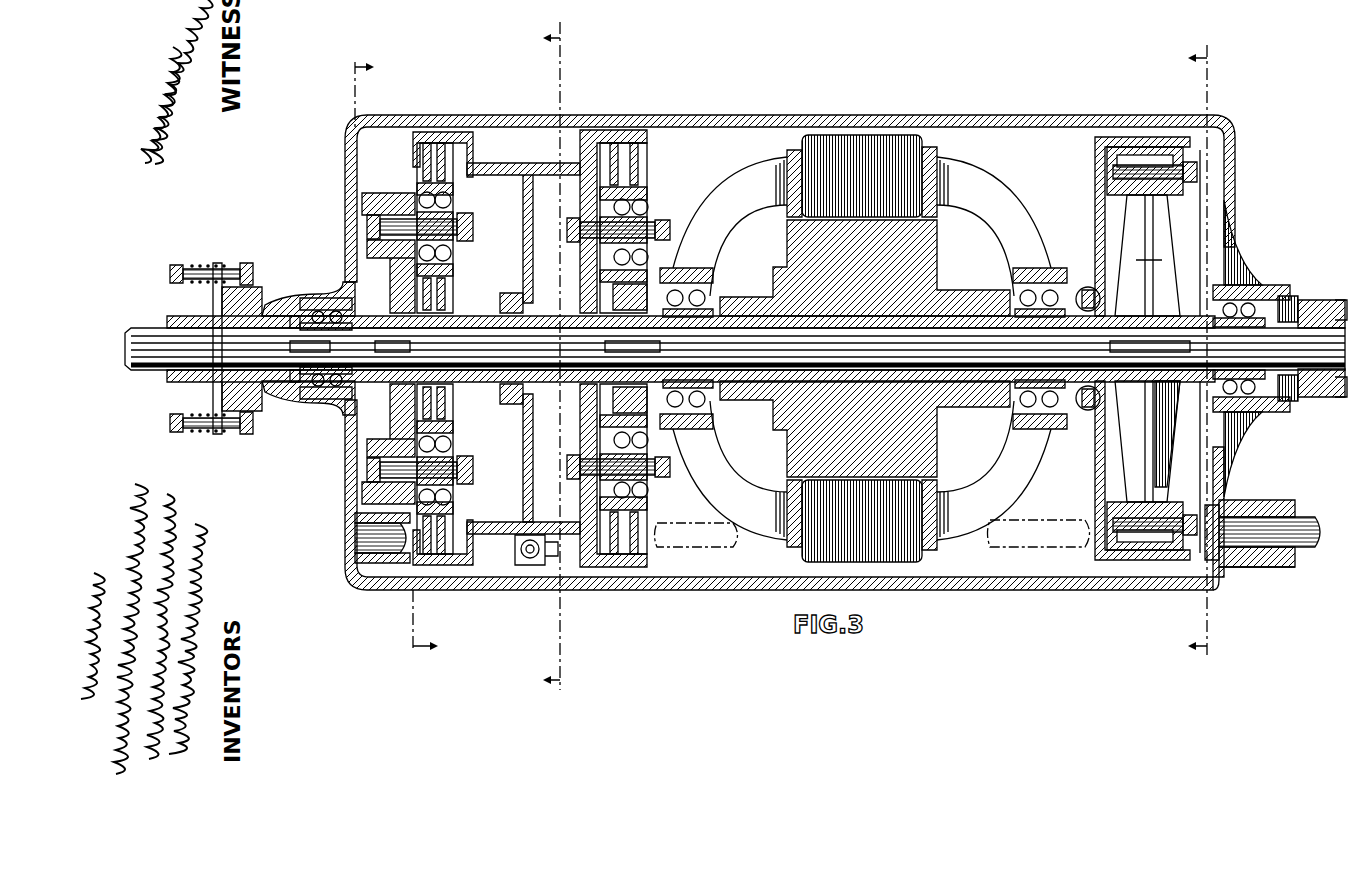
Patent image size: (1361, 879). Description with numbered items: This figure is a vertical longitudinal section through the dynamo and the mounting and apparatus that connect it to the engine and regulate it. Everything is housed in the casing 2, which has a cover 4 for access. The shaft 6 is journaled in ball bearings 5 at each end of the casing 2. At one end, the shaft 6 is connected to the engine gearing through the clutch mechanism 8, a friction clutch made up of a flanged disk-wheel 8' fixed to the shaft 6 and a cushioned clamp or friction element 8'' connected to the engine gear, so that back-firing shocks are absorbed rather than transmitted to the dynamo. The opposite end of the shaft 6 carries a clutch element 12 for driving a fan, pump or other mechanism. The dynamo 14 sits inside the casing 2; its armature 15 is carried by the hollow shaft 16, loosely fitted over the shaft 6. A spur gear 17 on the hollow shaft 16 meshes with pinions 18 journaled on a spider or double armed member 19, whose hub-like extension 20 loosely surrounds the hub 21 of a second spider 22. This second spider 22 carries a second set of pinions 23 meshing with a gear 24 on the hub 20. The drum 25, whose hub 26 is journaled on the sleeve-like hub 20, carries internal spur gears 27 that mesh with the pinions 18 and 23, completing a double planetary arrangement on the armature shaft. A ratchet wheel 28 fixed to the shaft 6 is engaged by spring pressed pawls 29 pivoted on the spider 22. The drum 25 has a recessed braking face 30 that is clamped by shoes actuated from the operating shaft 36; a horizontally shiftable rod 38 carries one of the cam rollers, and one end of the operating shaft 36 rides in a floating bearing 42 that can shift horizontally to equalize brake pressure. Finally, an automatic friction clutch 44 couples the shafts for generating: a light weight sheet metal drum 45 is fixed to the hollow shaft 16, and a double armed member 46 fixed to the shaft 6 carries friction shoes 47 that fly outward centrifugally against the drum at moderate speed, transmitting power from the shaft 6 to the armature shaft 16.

The casing 2 is at (983, 591).
The cover 4 is at (862, 130).
The ball bearings 5 is at (307, 425).
The shaft 6 is at (160, 375).
The clutch mechanism 8 is at (221, 348).
The flanged or disk-wheel 8' is at (197, 444).
The cushioned clamp or friction element 8'' is at (200, 257).
The clutch element 12 is at (1316, 307).
The dynamo 14 is at (990, 190).
The armature 15 is at (800, 257).
The hollow shaft 16 is at (753, 405).
The spur gear 17 is at (607, 300).
The pinions 18 is at (648, 160).
The spider or double armed member 19 is at (612, 292).
The hub-like extension 20 is at (512, 292).
The hub 21 is at (522, 400).
The second spider or double armed member 22 is at (375, 258).
The pinions or second set of spur gears 23 is at (418, 162).
The gear 24 is at (455, 295).
The drum 25 is at (515, 163).
The hub 26 is at (465, 440).
The internal spur gears 27 is at (443, 130).
The ratchet wheel 28 is at (360, 312).
The spring pressed pawls 29 is at (347, 288).
The braking face 30 is at (500, 536).
The operating shaft 36 is at (353, 540).
The horizontally shiftable rod 38 is at (529, 566).
The floating bearing 42 is at (368, 560).
The automatic friction clutch 44 is at (1177, 205).
The light weight drum 45 is at (1106, 604).
The double armed member 46 is at (1165, 468).
The friction shoes 47 is at (1150, 147).